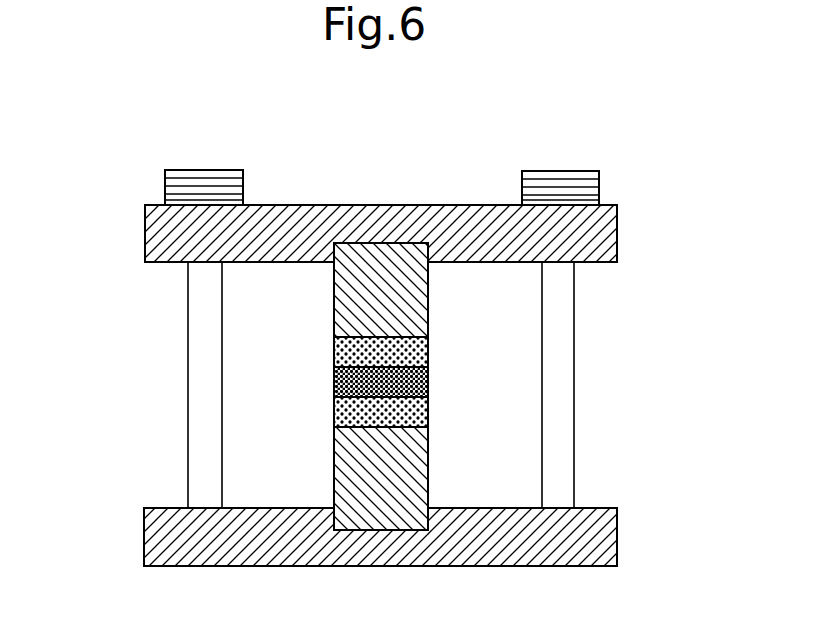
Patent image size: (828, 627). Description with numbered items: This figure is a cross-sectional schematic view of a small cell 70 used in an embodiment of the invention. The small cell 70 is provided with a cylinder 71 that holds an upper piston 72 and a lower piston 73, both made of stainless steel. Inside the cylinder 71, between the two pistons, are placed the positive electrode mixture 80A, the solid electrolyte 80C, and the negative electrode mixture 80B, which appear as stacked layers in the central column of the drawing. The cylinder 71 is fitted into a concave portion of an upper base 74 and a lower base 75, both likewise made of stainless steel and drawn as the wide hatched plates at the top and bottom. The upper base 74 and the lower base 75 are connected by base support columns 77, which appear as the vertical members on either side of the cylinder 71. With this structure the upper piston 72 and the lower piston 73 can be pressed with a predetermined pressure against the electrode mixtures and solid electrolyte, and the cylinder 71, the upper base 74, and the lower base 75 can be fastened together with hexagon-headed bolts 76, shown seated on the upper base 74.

The small cell 70 is at (493, 110).
The cylinder 71 is at (462, 378).
The upper piston 72 is at (428, 296).
The lower piston 73 is at (428, 465).
The upper base 74 is at (617, 230).
The lower base 75 is at (617, 543).
The hexagon-headed bolt 76 is at (183, 178).
The base support column 77 is at (188, 462).
The positive electrode mixture 80A is at (333, 410).
The negative electrode mixture 80B is at (332, 350).
The solid electrolyte 80C is at (333, 380).